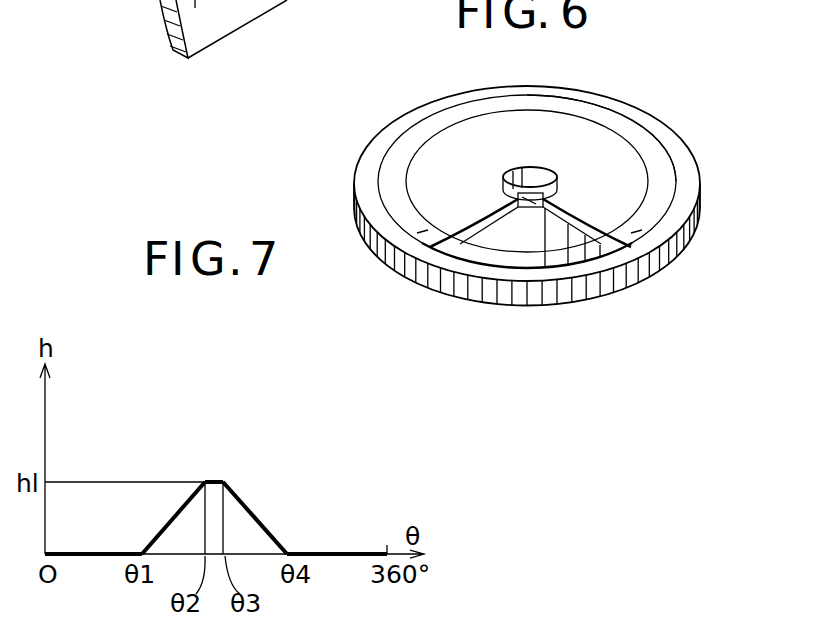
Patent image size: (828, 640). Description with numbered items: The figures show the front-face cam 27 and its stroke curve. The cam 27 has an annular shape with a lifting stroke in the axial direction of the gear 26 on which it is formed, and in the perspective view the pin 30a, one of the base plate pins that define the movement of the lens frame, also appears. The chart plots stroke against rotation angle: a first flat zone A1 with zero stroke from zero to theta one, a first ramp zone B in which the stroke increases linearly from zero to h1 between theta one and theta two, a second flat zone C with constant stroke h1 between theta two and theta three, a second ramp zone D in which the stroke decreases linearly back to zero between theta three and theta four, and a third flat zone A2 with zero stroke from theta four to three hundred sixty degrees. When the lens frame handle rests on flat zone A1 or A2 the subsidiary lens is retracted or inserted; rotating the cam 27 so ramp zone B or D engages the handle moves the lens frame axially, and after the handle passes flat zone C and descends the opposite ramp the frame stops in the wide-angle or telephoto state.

In FIG. 6, the gear 26 is at (673, 147).
In FIG. 6, the cam 27 is at (570, 243).
In FIG. 6, the pin 30a is at (276, 29).
In FIG. 6, the first flat zone A1 is at (402, 150).
In FIG. 7, the first flat zone A1 is at (88, 553).
In FIG. 6, the third flat zone A2 is at (632, 122).
In FIG. 7, the third flat zone A2 is at (356, 552).
In FIG. 6, the first ramp zone B is at (452, 238).
In FIG. 7, the first ramp zone B is at (166, 523).
In FIG. 6, the second flat zone C is at (532, 200).
In FIG. 7, the second flat zone C is at (215, 480).
In FIG. 6, the second ramp zone D is at (612, 238).
In FIG. 7, the second ramp zone D is at (262, 518).